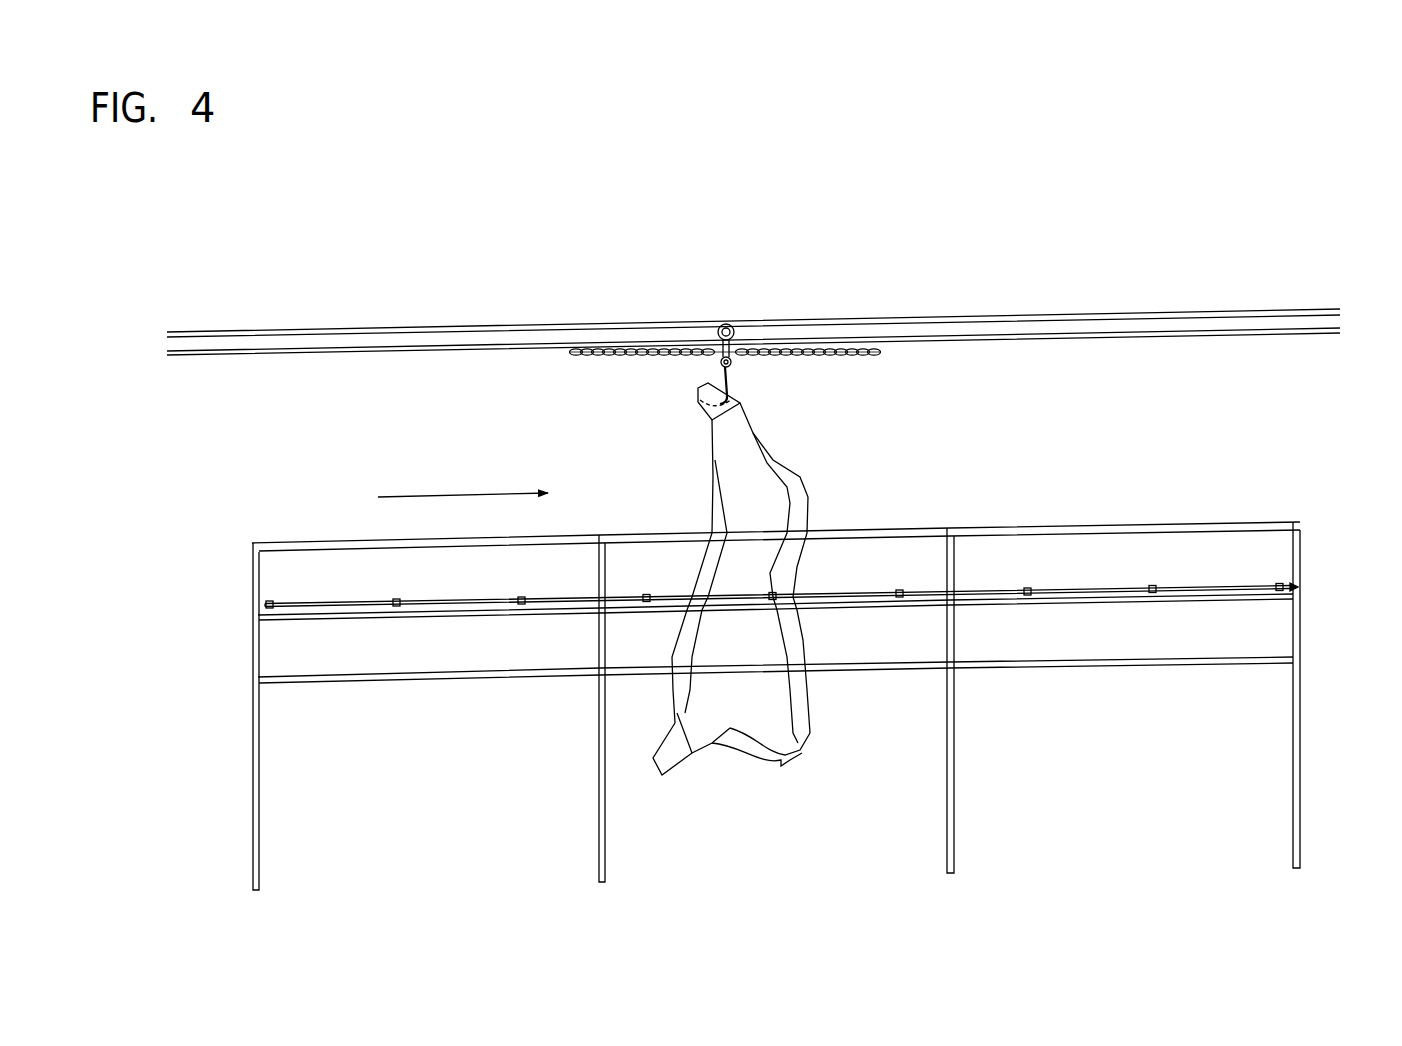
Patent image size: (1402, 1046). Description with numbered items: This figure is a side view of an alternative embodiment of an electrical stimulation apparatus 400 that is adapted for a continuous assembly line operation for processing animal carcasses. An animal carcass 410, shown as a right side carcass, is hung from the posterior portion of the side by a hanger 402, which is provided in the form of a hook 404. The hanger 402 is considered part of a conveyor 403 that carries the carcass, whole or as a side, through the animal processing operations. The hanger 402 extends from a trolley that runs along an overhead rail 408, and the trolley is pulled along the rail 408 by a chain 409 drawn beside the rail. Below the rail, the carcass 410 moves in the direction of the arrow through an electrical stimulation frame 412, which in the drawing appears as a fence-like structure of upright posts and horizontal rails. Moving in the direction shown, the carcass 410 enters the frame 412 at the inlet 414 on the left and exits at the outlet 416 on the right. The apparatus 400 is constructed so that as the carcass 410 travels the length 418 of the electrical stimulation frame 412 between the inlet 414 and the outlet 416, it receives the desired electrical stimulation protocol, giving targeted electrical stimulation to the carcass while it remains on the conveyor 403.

The electrical stimulation apparatus 400 is at (1300, 158).
The hanger 402 is at (720, 362).
The conveyor 403 is at (1090, 294).
The hook 404 is at (729, 386).
The rail 408 is at (447, 338).
The chain 409 is at (880, 352).
The animal carcass 410 is at (762, 500).
The electrical stimulation frame 412 is at (1067, 510).
The inlet 414 is at (278, 527).
The outlet 416 is at (1308, 505).
The length 418 is at (928, 493).